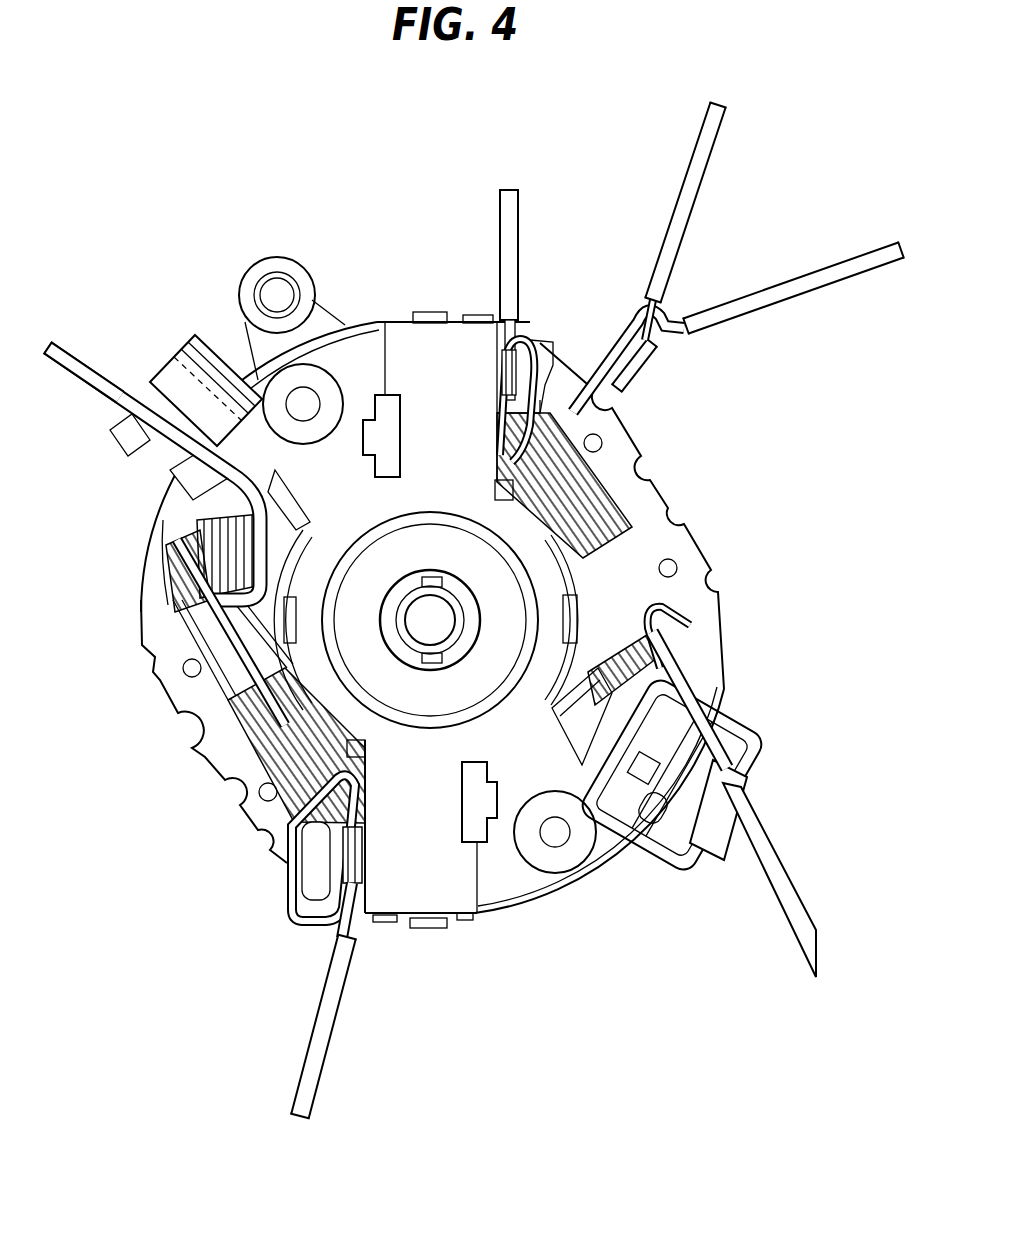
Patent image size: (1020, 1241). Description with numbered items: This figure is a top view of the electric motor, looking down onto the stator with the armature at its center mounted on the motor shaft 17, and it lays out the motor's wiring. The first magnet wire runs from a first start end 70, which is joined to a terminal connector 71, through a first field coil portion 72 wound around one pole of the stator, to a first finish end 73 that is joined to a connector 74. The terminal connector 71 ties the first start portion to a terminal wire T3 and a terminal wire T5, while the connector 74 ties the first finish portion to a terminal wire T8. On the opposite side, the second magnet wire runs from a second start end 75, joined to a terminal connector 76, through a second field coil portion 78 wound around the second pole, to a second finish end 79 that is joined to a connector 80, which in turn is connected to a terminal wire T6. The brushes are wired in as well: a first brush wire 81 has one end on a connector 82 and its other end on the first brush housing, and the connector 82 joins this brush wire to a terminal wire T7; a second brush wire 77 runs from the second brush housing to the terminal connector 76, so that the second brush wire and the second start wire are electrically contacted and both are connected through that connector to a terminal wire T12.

The motor shaft 17 is at (430, 620).
The first start end 70 is at (616, 340).
The terminal connector 71 is at (638, 375).
The first field coil portion 72 is at (622, 490).
The first finish end 73 is at (642, 612).
The connector 74 is at (690, 634).
The second start end 75 is at (292, 928).
The terminal connector 76 is at (363, 833).
The second brush wire 77 is at (363, 830).
The second field coil portion 78 is at (247, 785).
The second finish end 79 is at (300, 596).
The connector 80 is at (185, 566).
The first brush wire 81 is at (533, 340).
The connector 82 is at (507, 387).
The terminal wire T3 is at (716, 130).
The terminal wire T5 is at (818, 272).
The terminal wire T6 is at (97, 368).
The terminal wire T7 is at (514, 208).
The terminal wire T8 is at (810, 944).
The terminal wire T12 is at (312, 1100).